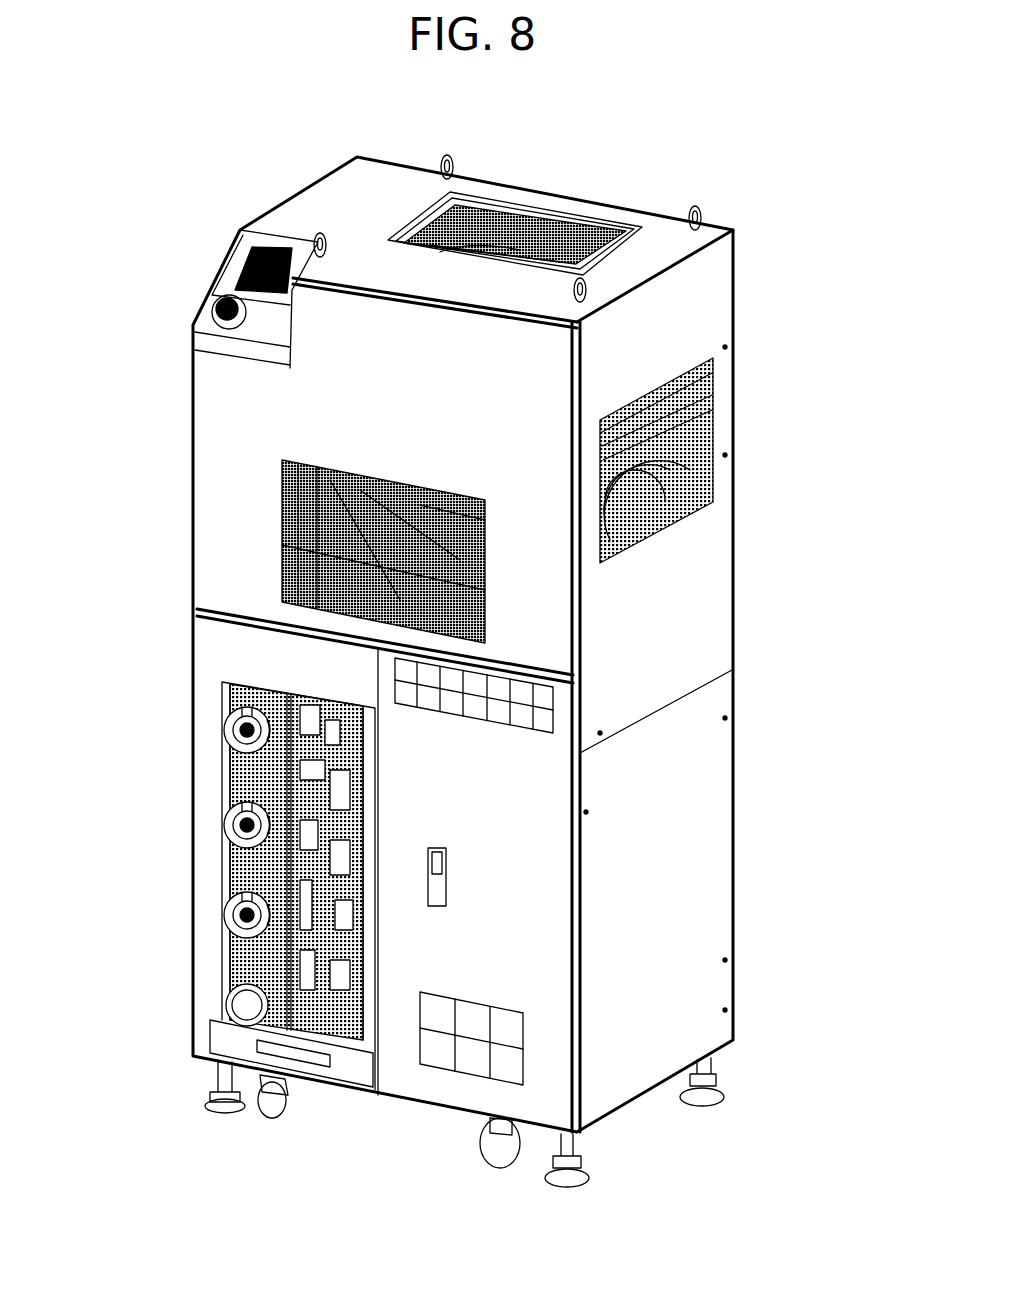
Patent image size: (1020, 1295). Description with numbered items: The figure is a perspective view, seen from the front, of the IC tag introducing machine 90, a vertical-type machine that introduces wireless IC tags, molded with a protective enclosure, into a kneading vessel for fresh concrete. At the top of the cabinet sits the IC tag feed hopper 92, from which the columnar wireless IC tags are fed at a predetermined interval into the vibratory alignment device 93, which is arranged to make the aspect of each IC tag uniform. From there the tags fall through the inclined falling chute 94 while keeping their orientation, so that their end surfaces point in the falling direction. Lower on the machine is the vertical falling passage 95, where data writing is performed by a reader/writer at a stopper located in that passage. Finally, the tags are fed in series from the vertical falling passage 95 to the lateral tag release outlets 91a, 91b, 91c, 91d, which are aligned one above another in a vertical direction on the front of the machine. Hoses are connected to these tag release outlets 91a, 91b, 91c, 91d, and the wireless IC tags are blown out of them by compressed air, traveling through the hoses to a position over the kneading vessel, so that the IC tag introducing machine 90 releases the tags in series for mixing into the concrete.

The IC tag introducing machine 90 is at (690, 157).
The tag release outlet 91a is at (243, 730).
The tag release outlet 91b is at (243, 826).
The tag release outlet 91c is at (243, 916).
The tag release outlet 91d is at (235, 1003).
The IC tag feed hopper 92 is at (470, 235).
The vibratory alignment device 93 is at (673, 497).
The inclined falling chute 94 is at (315, 583).
The vertical falling passage 95 is at (300, 795).